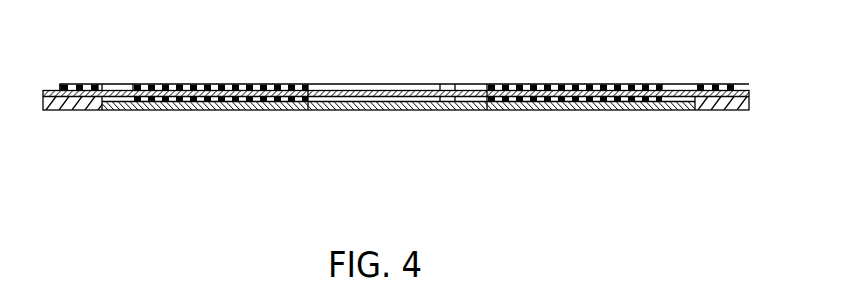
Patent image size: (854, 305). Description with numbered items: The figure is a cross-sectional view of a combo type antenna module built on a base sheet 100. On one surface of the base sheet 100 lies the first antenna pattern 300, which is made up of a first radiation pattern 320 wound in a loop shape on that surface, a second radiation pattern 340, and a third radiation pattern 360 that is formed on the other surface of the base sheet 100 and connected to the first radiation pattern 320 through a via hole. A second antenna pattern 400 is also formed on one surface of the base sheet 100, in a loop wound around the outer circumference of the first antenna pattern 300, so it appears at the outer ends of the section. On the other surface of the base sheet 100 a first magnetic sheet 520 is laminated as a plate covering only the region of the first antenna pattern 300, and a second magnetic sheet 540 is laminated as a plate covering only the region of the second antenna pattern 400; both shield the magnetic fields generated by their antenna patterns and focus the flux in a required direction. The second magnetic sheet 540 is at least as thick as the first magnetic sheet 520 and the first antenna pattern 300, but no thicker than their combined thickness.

The base sheet 100 is at (372, 90).
The first antenna pattern 300 is at (150, 40).
The first radiation pattern 320 is at (310, 80).
The second radiation pattern 340 is at (133, 80).
The third radiation pattern 360 is at (133, 113).
The second antenna pattern 400 is at (98, 80).
The first magnetic sheet 520 is at (370, 112).
The second magnetic sheet 540 is at (70, 112).